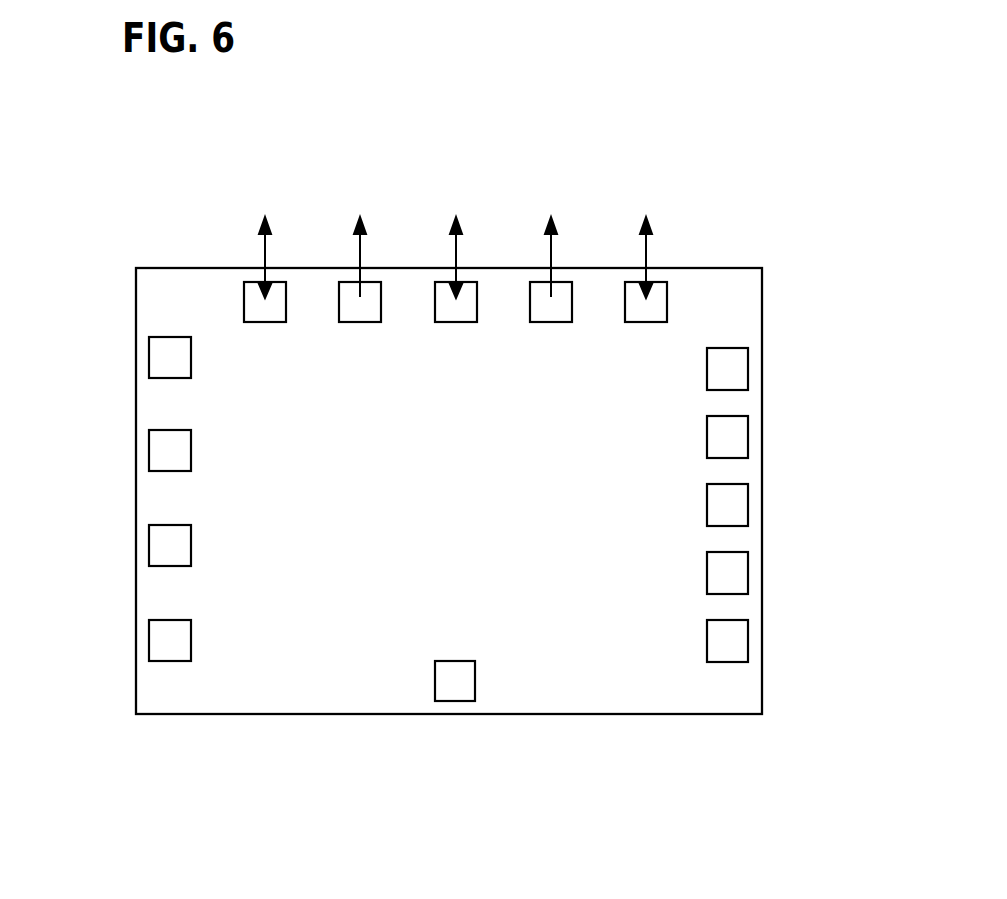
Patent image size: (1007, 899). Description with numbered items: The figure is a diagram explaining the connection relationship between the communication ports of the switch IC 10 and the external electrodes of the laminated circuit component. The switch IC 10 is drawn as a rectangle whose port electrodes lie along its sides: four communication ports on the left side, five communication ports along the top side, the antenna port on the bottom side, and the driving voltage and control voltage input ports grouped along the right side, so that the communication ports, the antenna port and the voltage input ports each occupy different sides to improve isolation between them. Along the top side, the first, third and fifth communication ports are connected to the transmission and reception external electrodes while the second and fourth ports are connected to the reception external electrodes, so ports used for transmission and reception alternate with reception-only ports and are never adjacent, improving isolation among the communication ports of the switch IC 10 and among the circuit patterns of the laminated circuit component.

The switch IC 10 is at (742, 268).